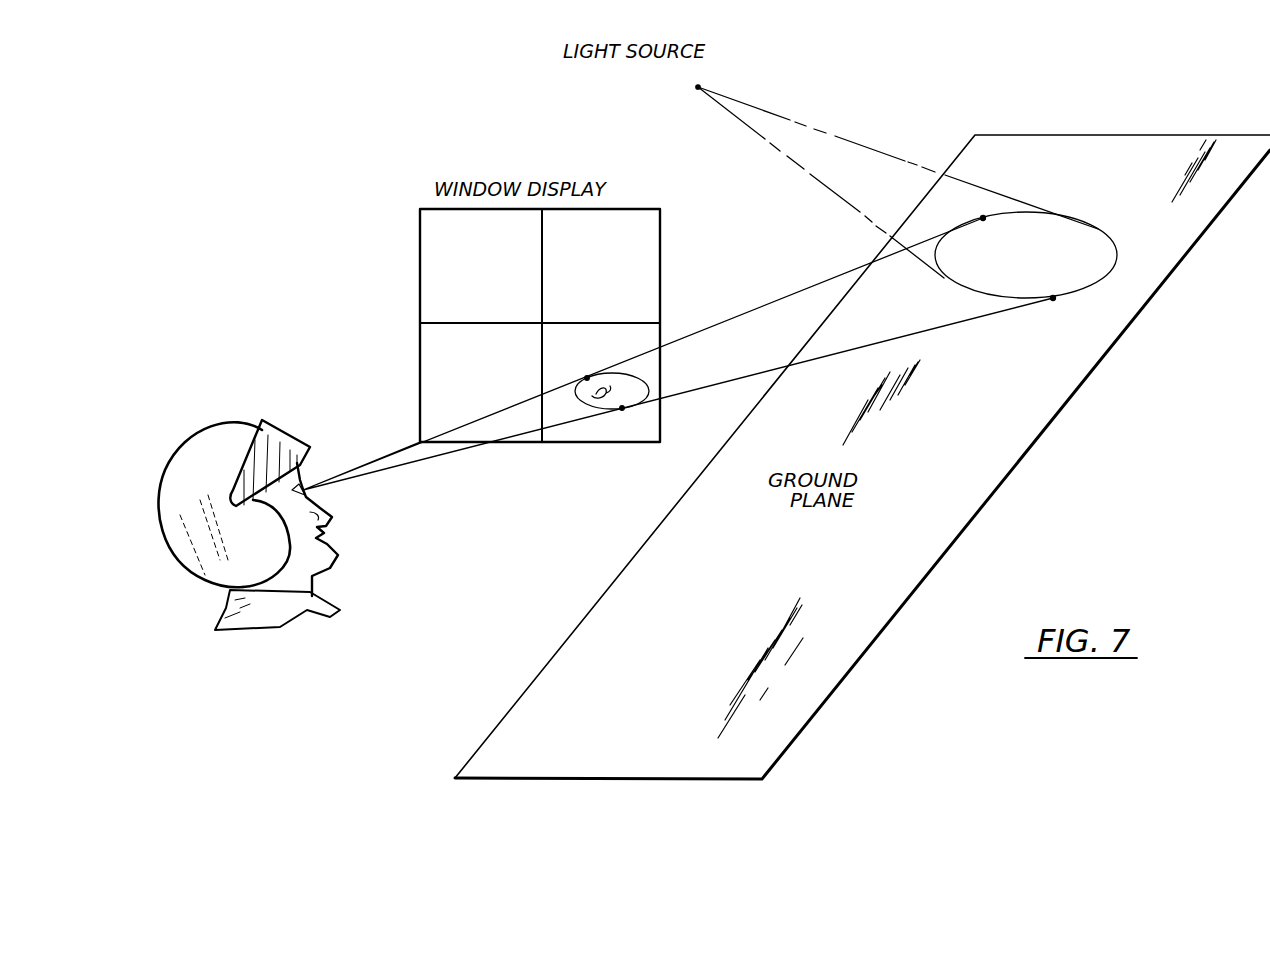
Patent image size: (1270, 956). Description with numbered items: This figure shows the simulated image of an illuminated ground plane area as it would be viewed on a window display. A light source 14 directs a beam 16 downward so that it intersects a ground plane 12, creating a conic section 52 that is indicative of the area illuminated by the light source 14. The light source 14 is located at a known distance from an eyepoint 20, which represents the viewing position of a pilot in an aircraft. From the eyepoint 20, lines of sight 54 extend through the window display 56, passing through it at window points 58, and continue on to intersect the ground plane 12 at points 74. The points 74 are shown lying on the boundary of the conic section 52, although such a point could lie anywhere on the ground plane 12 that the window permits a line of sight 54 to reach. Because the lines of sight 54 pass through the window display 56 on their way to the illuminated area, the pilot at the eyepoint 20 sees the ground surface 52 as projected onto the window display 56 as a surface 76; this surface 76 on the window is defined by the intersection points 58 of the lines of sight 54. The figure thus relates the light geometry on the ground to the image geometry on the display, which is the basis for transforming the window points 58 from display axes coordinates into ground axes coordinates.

The ground plane 12 is at (979, 473).
The light source 14 is at (696, 87).
The beam 16 is at (861, 153).
The eyepoint 20 is at (306, 488).
The conic section 52 is at (1098, 230).
The line of sight 54 is at (455, 428).
The window display 56 is at (442, 270).
The window point 58 is at (587, 377).
The ground plane intersection point 74 is at (983, 218).
The projected surface 76 is at (575, 398).